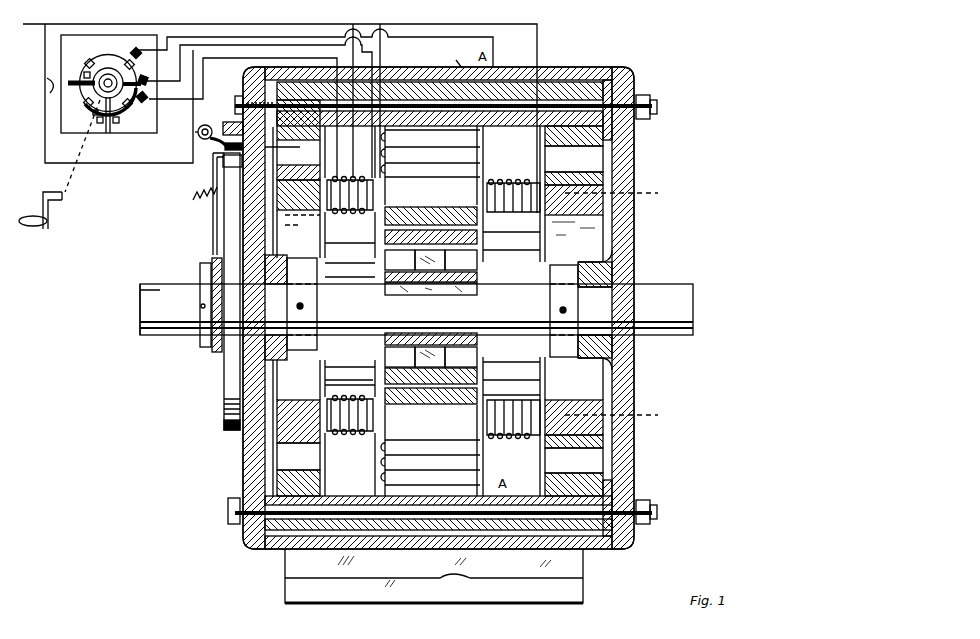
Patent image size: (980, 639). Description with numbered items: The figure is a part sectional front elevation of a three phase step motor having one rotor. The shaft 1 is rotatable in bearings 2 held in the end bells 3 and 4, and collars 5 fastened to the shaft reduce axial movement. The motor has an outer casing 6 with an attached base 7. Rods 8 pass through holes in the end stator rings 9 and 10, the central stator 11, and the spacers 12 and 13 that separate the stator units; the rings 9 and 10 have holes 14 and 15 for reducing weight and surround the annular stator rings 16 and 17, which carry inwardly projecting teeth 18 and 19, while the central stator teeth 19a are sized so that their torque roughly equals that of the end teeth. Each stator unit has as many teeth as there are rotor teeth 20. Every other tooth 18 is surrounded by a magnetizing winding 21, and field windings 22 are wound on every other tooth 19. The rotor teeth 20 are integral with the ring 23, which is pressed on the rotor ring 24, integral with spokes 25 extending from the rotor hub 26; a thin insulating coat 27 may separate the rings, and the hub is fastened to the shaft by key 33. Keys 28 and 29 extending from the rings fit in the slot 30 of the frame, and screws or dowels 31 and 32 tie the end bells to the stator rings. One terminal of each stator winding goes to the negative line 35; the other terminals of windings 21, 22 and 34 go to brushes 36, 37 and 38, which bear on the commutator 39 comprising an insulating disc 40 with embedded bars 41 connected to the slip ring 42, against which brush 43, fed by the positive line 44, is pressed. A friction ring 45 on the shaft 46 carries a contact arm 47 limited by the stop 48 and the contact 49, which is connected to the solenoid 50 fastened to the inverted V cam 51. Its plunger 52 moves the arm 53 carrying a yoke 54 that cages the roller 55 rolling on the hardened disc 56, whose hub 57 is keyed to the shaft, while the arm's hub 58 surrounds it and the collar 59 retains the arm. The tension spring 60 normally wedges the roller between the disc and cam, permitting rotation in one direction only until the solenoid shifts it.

The shaft 1 is at (680, 290).
The bearings 2 is at (287, 281).
The end bell 3 is at (634, 383).
The end bell 4 is at (243, 460).
The collars 5 is at (302, 350).
The outer casing 6 is at (557, 68).
The base 7 is at (297, 568).
The rods 8 is at (657, 106).
The end stator ring 9 is at (298, 132).
The end stator ring 10 is at (582, 150).
The central stator 11 is at (456, 57).
The spacer 12 is at (388, 72).
The spacer 13 is at (510, 82).
The hole 14 is at (298, 428).
The hole 15 is at (574, 448).
The annular stator ring 16 is at (305, 225).
The annular stator ring 17 is at (586, 220).
The stator teeth 18 is at (407, 194).
The stator teeth 19 is at (485, 200).
The central stator teeth 19a is at (410, 440).
The rotor teeth 20 is at (433, 194).
The magnetizing winding 21 is at (362, 212).
The field windings 22 is at (400, 145).
The ring 23 is at (458, 404).
The rotor ring 24 is at (373, 377).
The spokes 25 is at (431, 238).
The rotor hub 26 is at (440, 330).
The insulation 27 is at (431, 350).
The key 28 is at (300, 550).
The key 29 is at (580, 545).
The slot 30 is at (593, 551).
The screws or dowels 31 is at (299, 234).
The screws or dowels 32 is at (621, 304).
The key 33 is at (435, 293).
The windings 34 is at (518, 183).
The negative line 35 is at (100, 24).
The brush 36 is at (236, 118).
The brush 37 is at (255, 107).
The brush 38 is at (311, 48).
The commutator 39 is at (67, 95).
The insulating disc 40 is at (119, 52).
The commutator bars 41 is at (90, 66).
The slip ring 42 is at (108, 84).
The brush 43 is at (81, 107).
The positive line 44 is at (58, 79).
The friction ring 45 is at (134, 83).
The shaft 46 is at (78, 69).
The contact arm 47 is at (108, 130).
The stop 48 is at (97, 113).
The contact 49 is at (120, 123).
The solenoid 50 is at (205, 125).
The cam 51 is at (228, 122).
The plunger 52 is at (184, 136).
The arm 53 is at (213, 218).
The yoke 54 is at (231, 160).
The roller 55 is at (282, 147).
The disc 56 is at (224, 380).
The hub 57 is at (203, 302).
The hub 58 is at (216, 352).
The collar 59 is at (200, 266).
The tension spring 60 is at (193, 199).